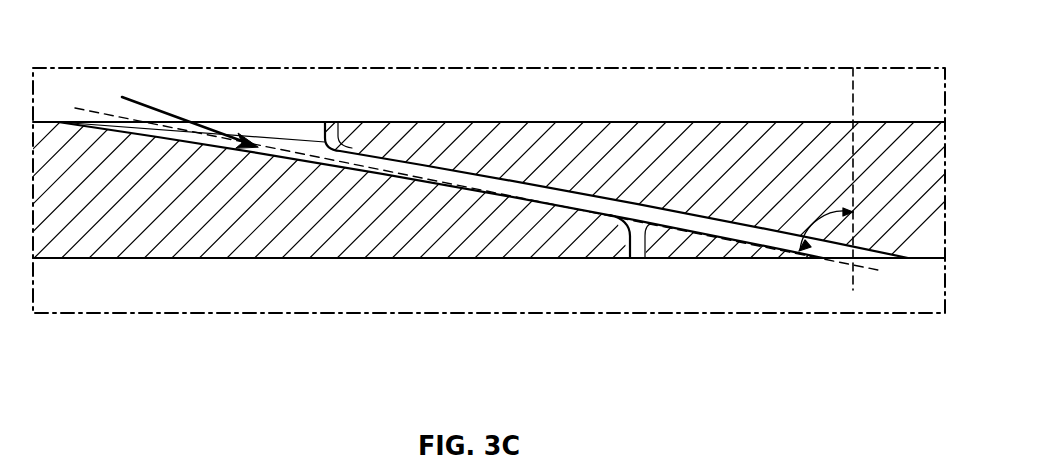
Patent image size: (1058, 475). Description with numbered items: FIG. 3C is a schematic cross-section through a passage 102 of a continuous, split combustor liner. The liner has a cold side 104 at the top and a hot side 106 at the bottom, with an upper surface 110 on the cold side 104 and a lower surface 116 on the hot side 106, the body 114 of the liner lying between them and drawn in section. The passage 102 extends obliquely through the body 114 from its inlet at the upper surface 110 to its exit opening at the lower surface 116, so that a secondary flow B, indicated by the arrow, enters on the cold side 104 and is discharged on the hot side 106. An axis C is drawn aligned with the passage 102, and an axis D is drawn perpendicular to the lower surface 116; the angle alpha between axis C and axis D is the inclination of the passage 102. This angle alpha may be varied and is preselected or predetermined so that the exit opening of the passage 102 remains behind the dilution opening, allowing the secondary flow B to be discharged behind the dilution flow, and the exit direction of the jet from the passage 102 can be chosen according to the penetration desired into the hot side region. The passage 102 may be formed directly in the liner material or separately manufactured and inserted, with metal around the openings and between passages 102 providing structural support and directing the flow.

The passage 102 is at (440, 192).
The cold side 104 is at (501, 110).
The hot side 106 is at (499, 301).
The upper surface 110 is at (613, 122).
The body 114 is at (198, 233).
The lower surface 116 is at (587, 257).
The secondary flow B is at (150, 104).
The axis aligned with the passage C is at (97, 112).
The axis perpendicular to the lower surface D is at (855, 92).
The angle alpha is at (815, 222).